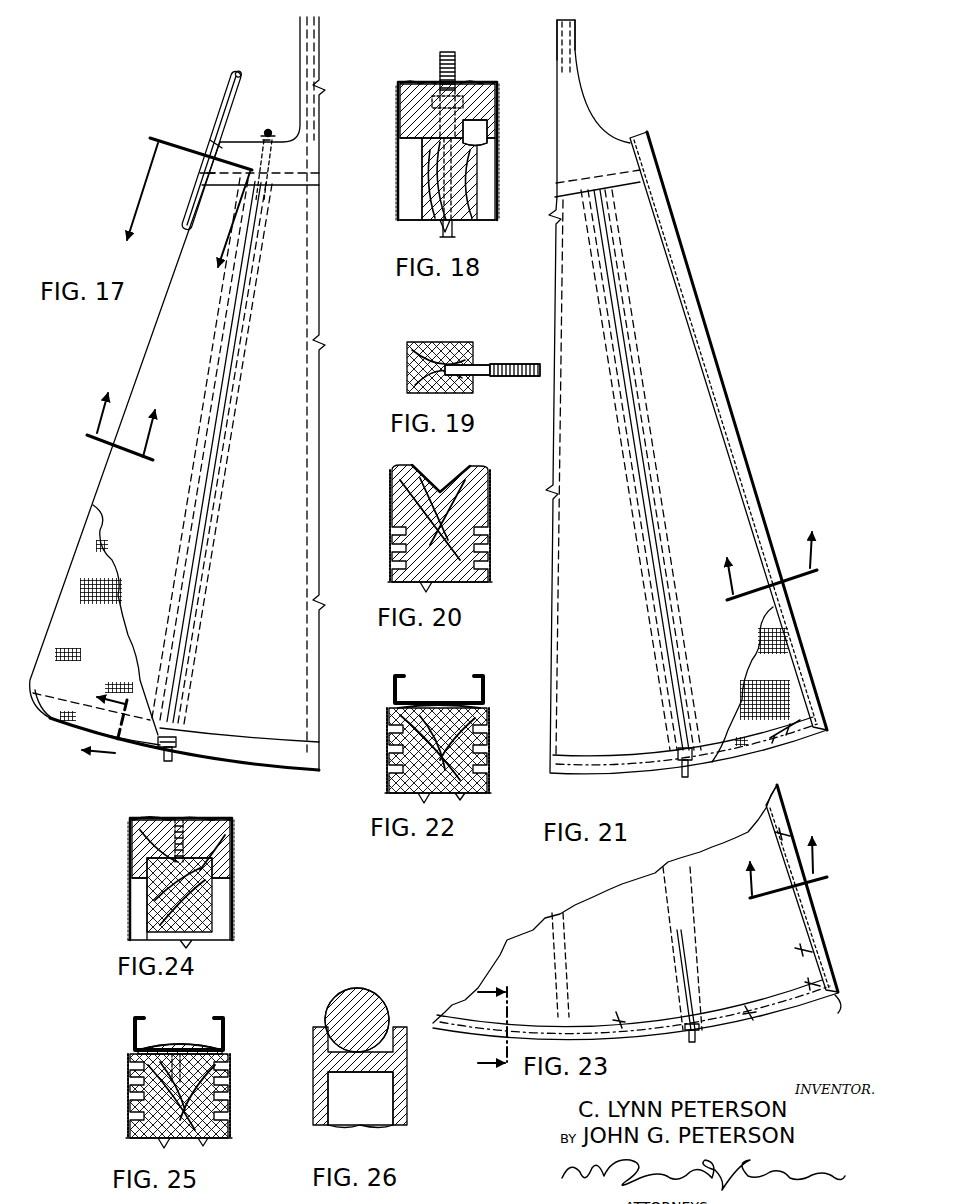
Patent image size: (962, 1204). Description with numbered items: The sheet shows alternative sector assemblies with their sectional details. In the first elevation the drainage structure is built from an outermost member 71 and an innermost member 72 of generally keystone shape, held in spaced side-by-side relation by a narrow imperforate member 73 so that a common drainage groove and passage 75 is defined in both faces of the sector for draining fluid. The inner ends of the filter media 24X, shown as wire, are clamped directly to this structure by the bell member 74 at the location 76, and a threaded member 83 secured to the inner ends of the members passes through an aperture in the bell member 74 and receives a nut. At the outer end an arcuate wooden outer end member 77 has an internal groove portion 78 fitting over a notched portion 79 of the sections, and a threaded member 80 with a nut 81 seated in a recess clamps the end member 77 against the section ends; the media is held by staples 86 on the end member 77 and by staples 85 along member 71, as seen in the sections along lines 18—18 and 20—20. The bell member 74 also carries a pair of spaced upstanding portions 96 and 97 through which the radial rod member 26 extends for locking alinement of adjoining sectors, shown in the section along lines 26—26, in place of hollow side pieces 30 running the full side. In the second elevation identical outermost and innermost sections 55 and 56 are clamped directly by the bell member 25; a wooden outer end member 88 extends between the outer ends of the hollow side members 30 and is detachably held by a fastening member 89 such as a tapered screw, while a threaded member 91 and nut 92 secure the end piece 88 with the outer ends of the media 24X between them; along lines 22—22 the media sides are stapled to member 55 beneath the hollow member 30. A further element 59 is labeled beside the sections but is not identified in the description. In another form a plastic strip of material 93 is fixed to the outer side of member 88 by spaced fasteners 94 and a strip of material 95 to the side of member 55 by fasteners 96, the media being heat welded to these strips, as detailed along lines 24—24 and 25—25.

In FIG. 17, the section line 18 is at (98, 735).
In FIG. 17, the section line 20 is at (128, 424).
In FIG. 21, the section line 22 is at (758, 554).
In FIG. 23, the section line 24 is at (473, 1033).
In FIG. 21, the bell member 25 is at (608, 135).
In FIG. 23, the bell member 25 is at (770, 854).
In FIG. 17, the radial rod member 26 is at (232, 78).
In FIG. 26, the radial rod member 26 is at (372, 998).
In FIG. 22, the hollow side member 30 is at (404, 672).
In FIG. 21, the hollow side member 30 is at (660, 198).
In FIG. 23, the hollow side member 30 is at (806, 895).
In FIG. 25, the hollow side member 30 is at (218, 1022).
In FIG. 22, the outermost section 55 is at (392, 714).
In FIG. 21, the outermost section 55 is at (674, 373).
In FIG. 23, the outermost section 55 is at (758, 976).
In FIG. 24, the outermost section 55 is at (205, 908).
In FIG. 25, the outermost section 55 is at (229, 1075).
In FIG. 21, the innermost section 56 is at (593, 373).
In FIG. 21, the rod 59 is at (668, 632).
In FIG. 23, the rod 59 is at (692, 930).
In FIG. 17, the outermost member 71 is at (185, 376).
In FIG. 19, the outermost member 71 is at (406, 363).
In FIG. 20, the outermost member 71 is at (391, 490).
In FIG. 17, the innermost member 72 is at (277, 376).
In FIG. 17, the narrow imperforate member 73 is at (202, 618).
In FIG. 17, the bell member 74 is at (207, 170).
In FIG. 26, the bell member 74 is at (410, 1122).
In FIG. 17, the common drainage groove and passage 75 is at (236, 312).
In FIG. 17, the filter media clamping location 76 is at (212, 143).
In FIG. 17, the outer end member 77 is at (70, 723).
In FIG. 18, the outer end member 77 is at (488, 86).
In FIG. 18, the internal groove portion 78 is at (490, 112).
In FIG. 18, the notched portion 79 is at (490, 136).
In FIG. 17, the threaded member 80 is at (176, 723).
In FIG. 18, the threaded member 80 is at (443, 55).
In FIG. 19, the threaded member 80 is at (514, 362).
In FIG. 18, the nut 81 is at (456, 88).
In FIG. 17, the threaded member 83 is at (266, 130).
In FIG. 20, the staples 85 is at (438, 488).
In FIG. 18, the staples 86 is at (397, 98).
In FIG. 21, the outer end member 88 is at (563, 770).
In FIG. 23, the outer end member 88 is at (758, 1013).
In FIG. 24, the outer end member 88 is at (232, 843).
In FIG. 21, the fastening member 89 is at (765, 745).
In FIG. 23, the fastening member 89 is at (832, 998).
In FIG. 21, the threaded member 91 is at (690, 775).
In FIG. 23, the threaded member 91 is at (688, 1035).
In FIG. 21, the nut 92 is at (673, 760).
In FIG. 23, the nut 92 is at (700, 1030).
In FIG. 24, the strip of material 93 is at (135, 822).
In FIG. 23, the fasteners 94 is at (618, 1018).
In FIG. 24, the fasteners 94 is at (185, 820).
In FIG. 25, the strip of material 95 is at (215, 1050).
In FIG. 23, the fasteners / upstanding portion 96 is at (797, 953).
In FIG. 25, the fasteners / upstanding portion 96 is at (176, 1052).
In FIG. 26, the fasteners / upstanding portion 96 is at (318, 1027).
In FIG. 26, the upstanding portion 97 is at (408, 1052).
In FIG. 17, the filter media 24X is at (86, 548).
In FIG. 18, the filter media 24X is at (397, 156).
In FIG. 20, the filter media 24X is at (390, 552).
In FIG. 22, the filter media 24X is at (388, 754).
In FIG. 21, the filter media 24X is at (762, 642).
In FIG. 24, the filter media 24X is at (129, 892).
In FIG. 25, the filter media 24X is at (130, 1060).